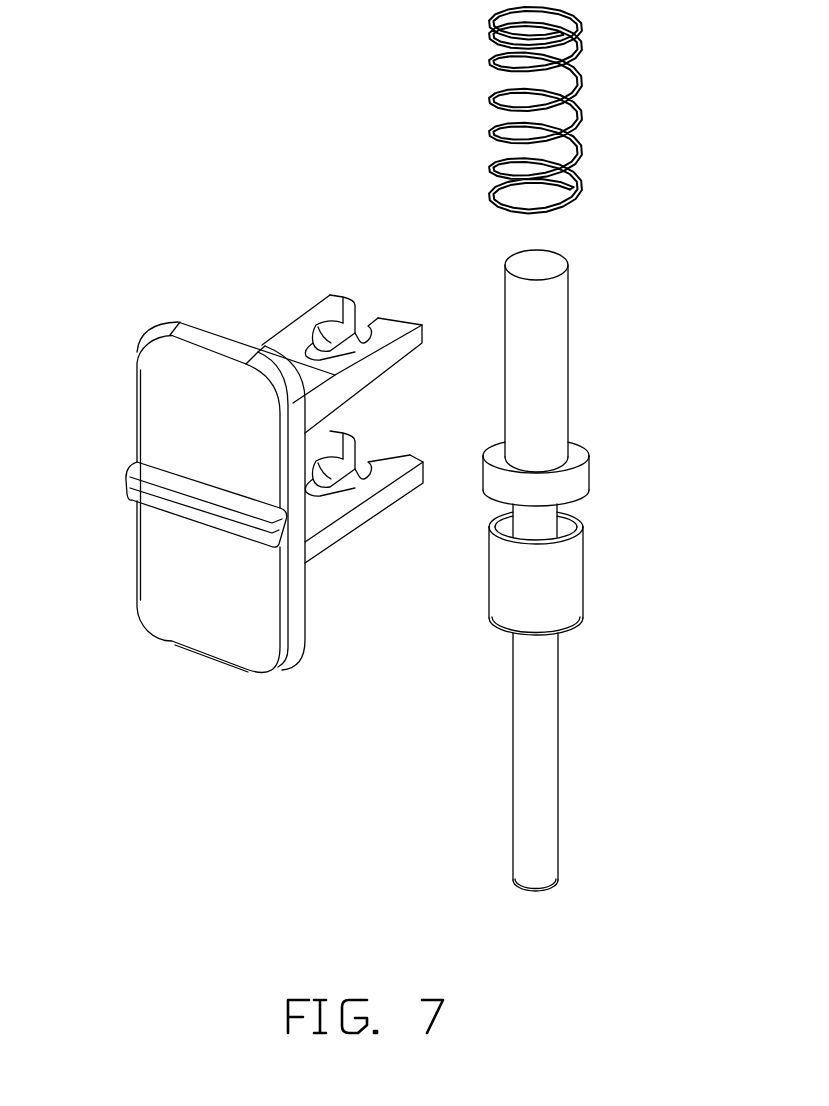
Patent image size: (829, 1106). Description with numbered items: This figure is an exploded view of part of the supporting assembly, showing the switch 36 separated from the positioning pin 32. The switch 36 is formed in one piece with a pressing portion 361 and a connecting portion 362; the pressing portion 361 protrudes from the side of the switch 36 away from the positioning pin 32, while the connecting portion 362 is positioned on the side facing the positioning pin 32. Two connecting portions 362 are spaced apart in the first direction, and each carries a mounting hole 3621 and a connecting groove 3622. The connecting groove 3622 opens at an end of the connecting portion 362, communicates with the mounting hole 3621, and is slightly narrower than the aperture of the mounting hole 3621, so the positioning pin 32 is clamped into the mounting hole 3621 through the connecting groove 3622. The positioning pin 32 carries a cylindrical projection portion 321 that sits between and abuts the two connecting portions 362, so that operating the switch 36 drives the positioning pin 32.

The switch 36 is at (358, 339).
The pressing portion 361 is at (145, 478).
The connecting portion 362 is at (325, 411).
The mounting hole 3621 is at (322, 333).
The connecting groove 3622 is at (365, 316).
The positioning pin 32 is at (580, 570).
The projection portion 321 is at (568, 577).